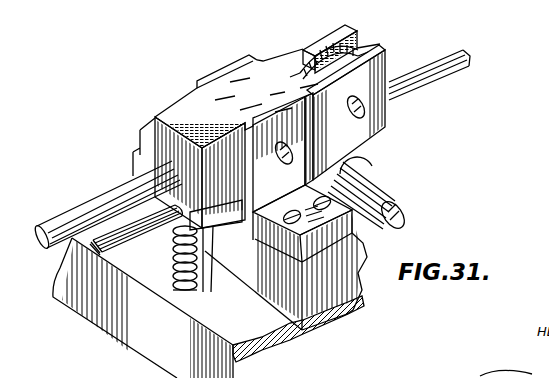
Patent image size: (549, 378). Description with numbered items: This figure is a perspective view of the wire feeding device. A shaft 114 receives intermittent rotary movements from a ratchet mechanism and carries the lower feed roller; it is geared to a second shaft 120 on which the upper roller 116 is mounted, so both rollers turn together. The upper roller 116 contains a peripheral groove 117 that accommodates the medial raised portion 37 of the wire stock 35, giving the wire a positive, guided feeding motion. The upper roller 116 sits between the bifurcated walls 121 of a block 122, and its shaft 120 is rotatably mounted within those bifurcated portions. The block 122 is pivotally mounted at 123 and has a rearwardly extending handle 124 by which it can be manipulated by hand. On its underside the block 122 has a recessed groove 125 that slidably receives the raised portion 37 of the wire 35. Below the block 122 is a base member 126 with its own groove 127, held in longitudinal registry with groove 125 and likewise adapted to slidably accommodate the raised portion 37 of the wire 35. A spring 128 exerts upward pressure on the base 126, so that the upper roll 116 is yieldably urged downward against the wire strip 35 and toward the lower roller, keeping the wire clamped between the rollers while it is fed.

The wire stock 35 is at (117, 252).
The medial raised portion 37 is at (137, 228).
The shaft 114 is at (384, 190).
The upper roller 116 is at (313, 47).
The peripheral groove 117 is at (322, 47).
The shaft 120 is at (362, 113).
The bifurcated walls 121 is at (383, 50).
The block 122 is at (186, 97).
The pivot 123 is at (277, 164).
The handle 124 is at (42, 224).
The recessed groove 125 is at (216, 229).
The base member 126 is at (209, 262).
The groove 127 is at (173, 240).
The spring 128 is at (184, 296).